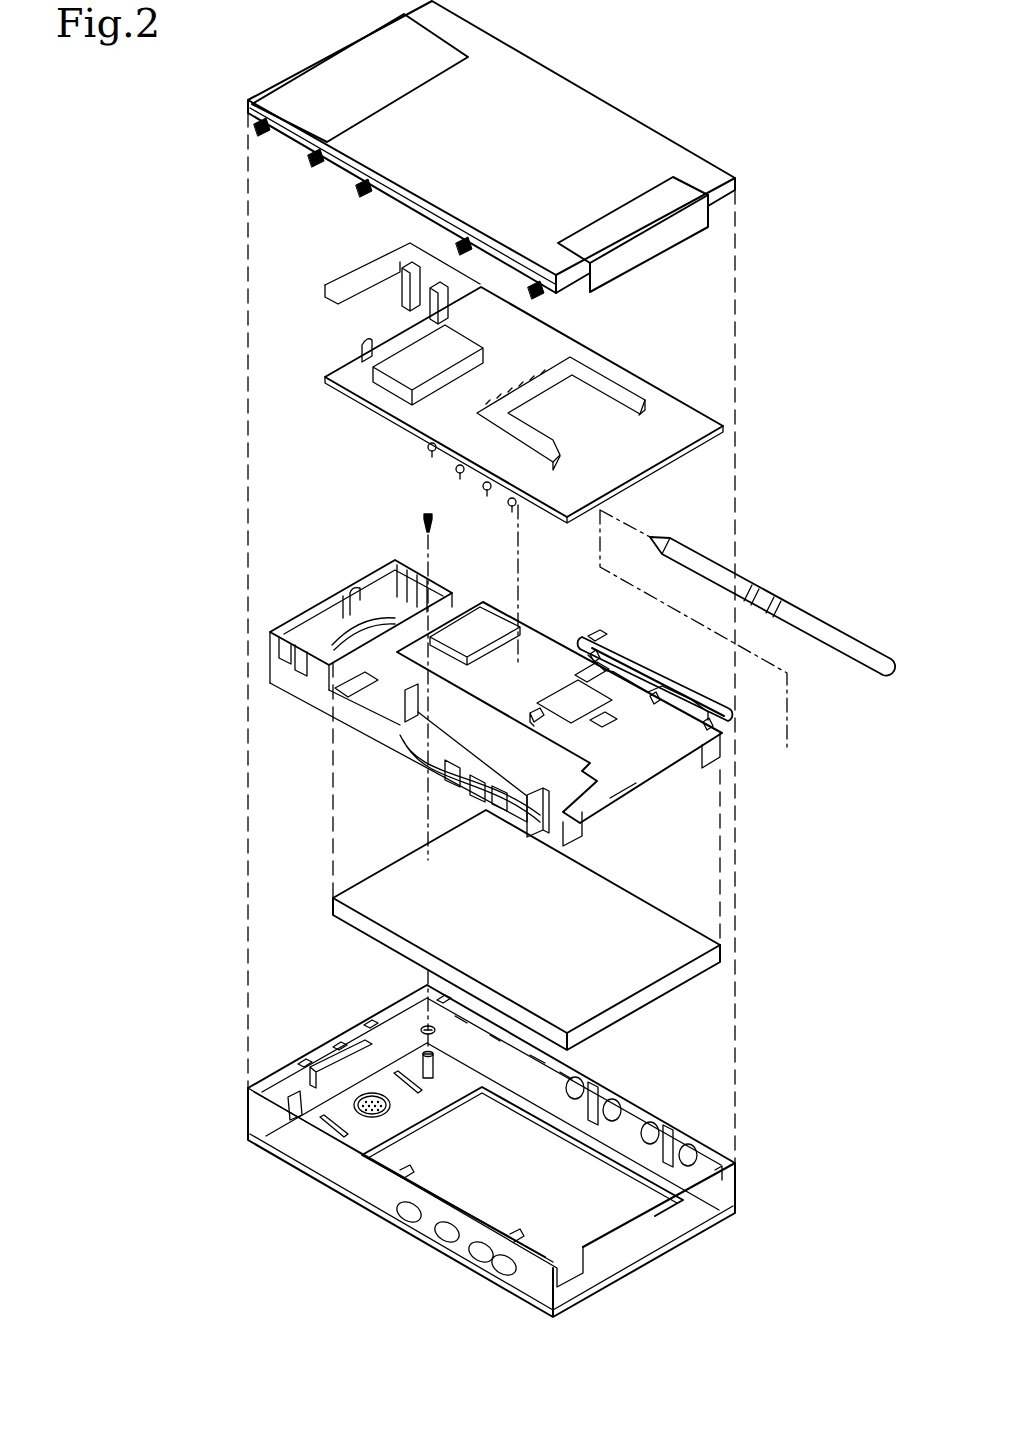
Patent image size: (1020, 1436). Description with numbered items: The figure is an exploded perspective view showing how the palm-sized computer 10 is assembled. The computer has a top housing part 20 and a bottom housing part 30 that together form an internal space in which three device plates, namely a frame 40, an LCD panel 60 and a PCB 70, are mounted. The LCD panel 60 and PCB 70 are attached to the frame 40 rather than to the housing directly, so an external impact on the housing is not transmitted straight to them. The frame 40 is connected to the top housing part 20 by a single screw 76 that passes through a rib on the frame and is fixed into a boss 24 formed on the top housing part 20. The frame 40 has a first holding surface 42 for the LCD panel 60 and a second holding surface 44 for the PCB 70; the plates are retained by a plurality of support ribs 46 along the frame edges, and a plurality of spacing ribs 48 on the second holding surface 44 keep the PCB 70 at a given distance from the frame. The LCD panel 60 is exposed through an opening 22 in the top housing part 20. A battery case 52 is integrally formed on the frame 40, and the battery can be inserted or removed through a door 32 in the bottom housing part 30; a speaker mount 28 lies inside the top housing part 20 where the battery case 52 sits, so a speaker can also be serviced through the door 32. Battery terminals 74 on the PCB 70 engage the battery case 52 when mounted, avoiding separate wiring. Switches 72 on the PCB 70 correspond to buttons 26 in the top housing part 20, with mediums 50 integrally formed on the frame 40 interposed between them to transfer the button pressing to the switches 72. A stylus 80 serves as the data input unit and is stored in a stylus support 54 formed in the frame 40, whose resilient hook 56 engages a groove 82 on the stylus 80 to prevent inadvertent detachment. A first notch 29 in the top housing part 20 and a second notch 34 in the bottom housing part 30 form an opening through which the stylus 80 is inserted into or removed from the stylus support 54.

The palm-sized computer 10 is at (124, 100).
The top housing part 20 is at (258, 1122).
The opening 22 is at (630, 1225).
The boss 24 is at (438, 1072).
The buttons 26 is at (504, 1274).
The speaker mount 28 is at (370, 1098).
The first notch 29 is at (730, 1172).
The bottom housing part 30 is at (593, 100).
The door 32 is at (330, 68).
The second notch 34 is at (738, 190).
The frame 40 is at (318, 732).
The first holding surface 42 is at (638, 787).
The second holding surface 44 is at (670, 763).
The support ribs 46 is at (397, 715).
The spacing ribs 48 is at (535, 714).
The mediums 50 is at (420, 775).
The battery case 52 is at (322, 612).
The stylus support 54 is at (640, 666).
The hook 56 is at (606, 638).
The LCD panel 60 is at (650, 1000).
The PCB 70 is at (668, 398).
The switches 72 is at (512, 508).
The battery terminals 74 is at (400, 306).
The screw 76 is at (420, 522).
The stylus 80 is at (815, 622).
The groove 82 is at (760, 600).